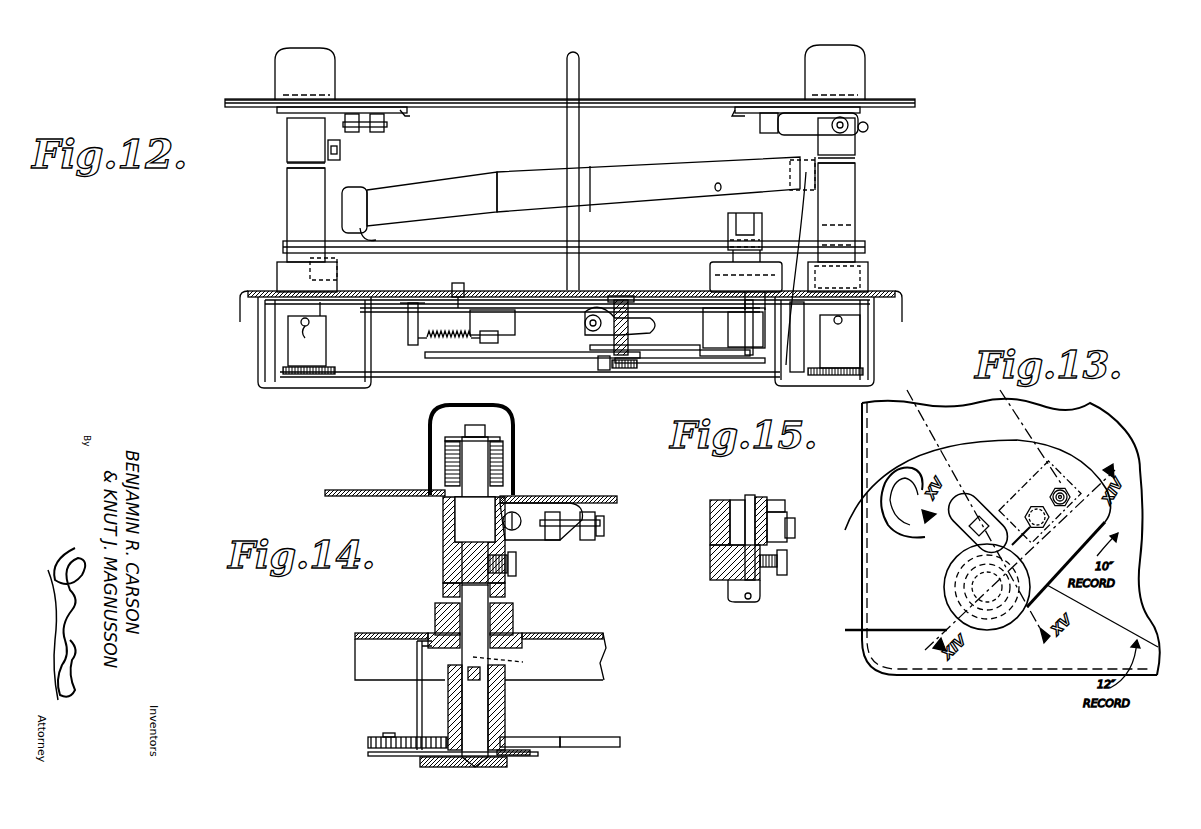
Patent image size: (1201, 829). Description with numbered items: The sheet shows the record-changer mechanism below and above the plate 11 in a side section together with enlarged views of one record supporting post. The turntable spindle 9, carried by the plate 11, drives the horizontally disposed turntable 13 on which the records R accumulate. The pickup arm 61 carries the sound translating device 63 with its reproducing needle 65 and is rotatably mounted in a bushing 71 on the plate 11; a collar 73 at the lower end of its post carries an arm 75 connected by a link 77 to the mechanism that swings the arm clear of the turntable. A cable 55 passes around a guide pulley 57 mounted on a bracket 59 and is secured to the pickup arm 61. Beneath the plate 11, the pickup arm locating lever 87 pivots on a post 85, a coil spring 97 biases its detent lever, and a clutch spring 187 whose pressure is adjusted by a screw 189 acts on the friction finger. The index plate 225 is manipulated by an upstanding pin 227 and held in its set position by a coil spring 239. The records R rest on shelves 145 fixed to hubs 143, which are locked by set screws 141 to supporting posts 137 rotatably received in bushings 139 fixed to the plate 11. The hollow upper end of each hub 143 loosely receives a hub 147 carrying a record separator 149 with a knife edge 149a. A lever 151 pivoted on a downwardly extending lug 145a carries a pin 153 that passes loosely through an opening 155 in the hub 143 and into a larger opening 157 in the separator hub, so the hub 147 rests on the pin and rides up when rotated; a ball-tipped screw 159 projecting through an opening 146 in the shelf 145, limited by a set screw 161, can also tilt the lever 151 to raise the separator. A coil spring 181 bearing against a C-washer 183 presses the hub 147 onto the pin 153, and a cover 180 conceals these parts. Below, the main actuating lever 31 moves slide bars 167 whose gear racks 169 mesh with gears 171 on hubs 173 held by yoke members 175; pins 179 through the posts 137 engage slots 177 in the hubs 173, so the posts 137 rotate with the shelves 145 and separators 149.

In FIG. 12, the turntable spindle 9 is at (577, 96).
In FIG. 12, the records R is at (500, 98).
In FIG. 12, the second plate 11 is at (250, 290).
In FIG. 14, the second plate 11 is at (600, 670).
In FIG. 13, the second plate 11 is at (898, 676).
In FIG. 12, the turntable 13 is at (514, 255).
In FIG. 12, the actuating lever 31 is at (524, 360).
In FIG. 12, the cable 55 is at (803, 208).
In FIG. 12, the guide roller or pulley 57 is at (767, 292).
In FIG. 12, the bracket 59 is at (834, 335).
In FIG. 12, the pickup arm 61 is at (628, 168).
In FIG. 12, the sound translating device 63 is at (442, 183).
In FIG. 12, the reproducing needle 65 is at (380, 228).
In FIG. 12, the bushing 71 is at (712, 271).
In FIG. 12, the collar 73 is at (758, 357).
In FIG. 12, the arm 75 is at (740, 357).
In FIG. 12, the link 77 is at (650, 352).
In FIG. 12, the post 85 is at (734, 328).
In FIG. 12, the pickup arm locating lever 87 is at (695, 364).
In FIG. 12, the coil spring 97 is at (618, 372).
In FIG. 12, the supporting posts 137 is at (290, 165).
In FIG. 14, the supporting posts 137 is at (473, 623).
In FIG. 15, the supporting posts 137 is at (712, 527).
In FIG. 12, the bushings 139 is at (300, 203).
In FIG. 14, the bushings 139 is at (437, 613).
In FIG. 12, the set screws 141 is at (342, 152).
In FIG. 15, the set screws 141 is at (780, 578).
In FIG. 12, the hubs 143 is at (298, 127).
In FIG. 14, the hubs 143 is at (446, 561).
In FIG. 15, the hubs 143 is at (712, 566).
In FIG. 12, the record supporting shelves 145 is at (404, 114).
In FIG. 14, the record supporting shelves 145 is at (622, 489).
In FIG. 13, the record supporting shelves 145 is at (1032, 455).
In FIG. 14, the lug 145a is at (522, 512).
In FIG. 13, the lug 145a is at (1030, 540).
In FIG. 14, the opening 146 is at (580, 500).
In FIG. 14, the hubs 147 is at (515, 496).
In FIG. 15, the hubs 147 is at (730, 500).
In FIG. 12, the record separators 149 is at (366, 100).
In FIG. 14, the record separators 149 is at (368, 490).
In FIG. 13, the record separators 149 is at (882, 625).
In FIG. 13, the knife edge 149a is at (902, 513).
In FIG. 12, the lever 151 is at (354, 134).
In FIG. 14, the lever 151 is at (548, 541).
In FIG. 15, the lever 151 is at (795, 533).
In FIG. 13, the lever 151 is at (1012, 503).
In FIG. 14, the pin 153 is at (475, 519).
In FIG. 15, the pin 153 is at (786, 514).
In FIG. 15, the opening 155 is at (775, 500).
In FIG. 15, the opening 157 is at (748, 497).
In FIG. 14, the ball-tipped screw 159 is at (600, 529).
In FIG. 13, the ball-tipped screw 159 is at (1066, 490).
In FIG. 14, the set screw 161 is at (586, 541).
In FIG. 13, the set screw 161 is at (1050, 521).
In FIG. 12, the slide bars 167 is at (378, 377).
In FIG. 14, the slide bars 167 is at (608, 731).
In FIG. 14, the gear racks 169 is at (387, 737).
In FIG. 12, the gears 171 is at (290, 369).
In FIG. 14, the gears 171 is at (510, 742).
In FIG. 12, the hubs 173 is at (292, 343).
In FIG. 14, the hubs 173 is at (498, 718).
In FIG. 14, the yoke members 175 is at (523, 762).
In FIG. 12, the slots 177 is at (316, 329).
In FIG. 14, the slots 177 is at (514, 663).
In FIG. 12, the pins 179 is at (852, 283).
In FIG. 14, the pins 179 is at (474, 682).
In FIG. 12, the cover 180 is at (328, 58).
In FIG. 14, the cover 180 is at (431, 447).
In FIG. 14, the coil spring 181 is at (506, 453).
In FIG. 14, the C-washer 183 is at (490, 425).
In FIG. 12, the clutch spring 187 is at (623, 327).
In FIG. 12, the screw 189 is at (595, 340).
In FIG. 12, the index plate 225 is at (457, 324).
In FIG. 12, the pin 227 is at (454, 283).
In FIG. 12, the coil spring 239 is at (436, 345).